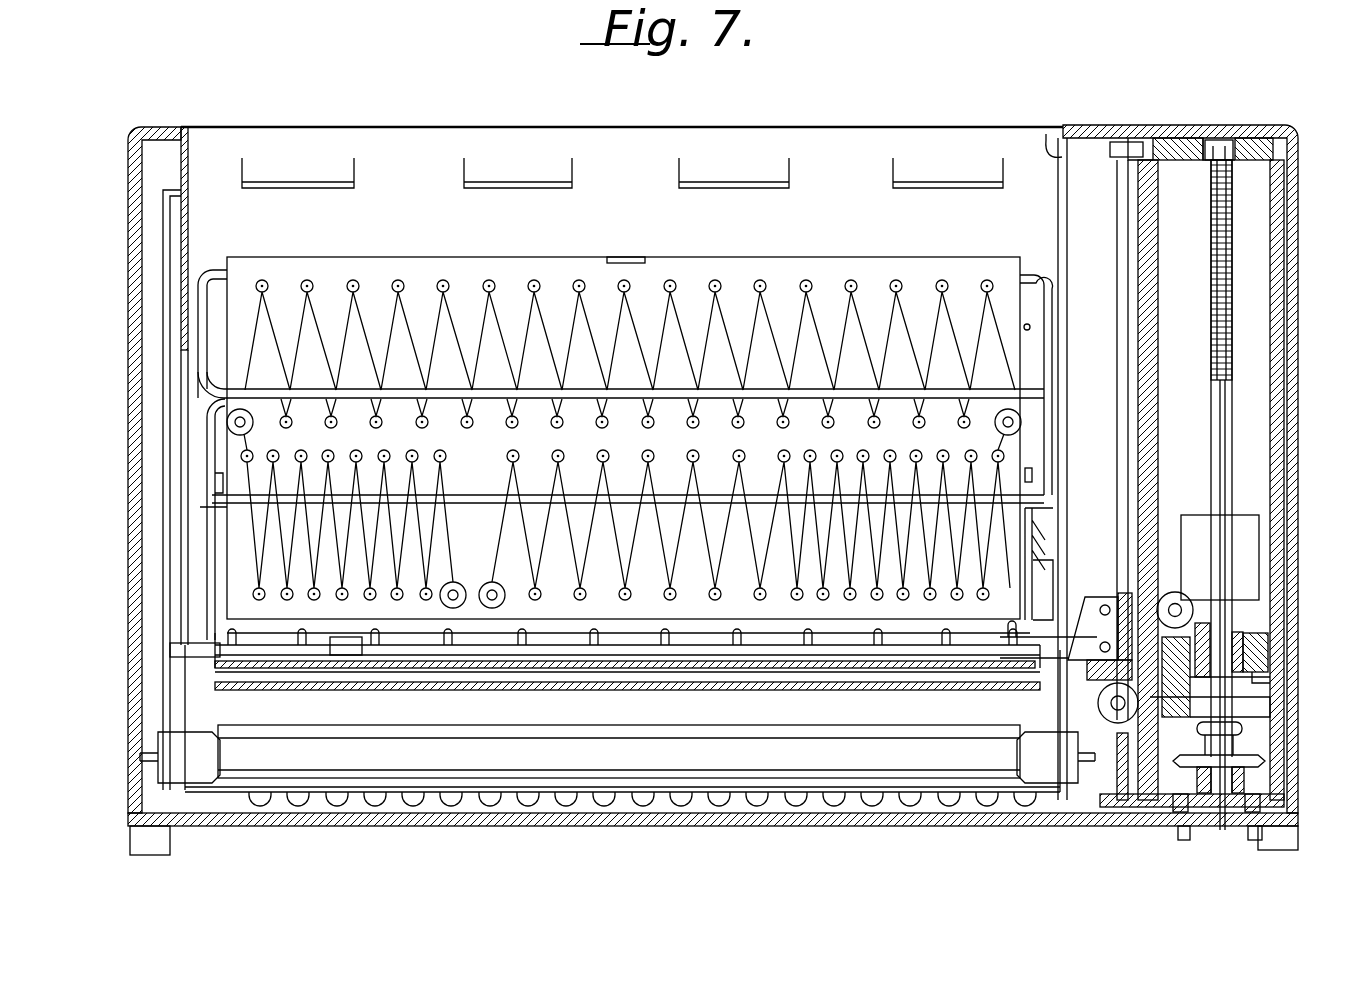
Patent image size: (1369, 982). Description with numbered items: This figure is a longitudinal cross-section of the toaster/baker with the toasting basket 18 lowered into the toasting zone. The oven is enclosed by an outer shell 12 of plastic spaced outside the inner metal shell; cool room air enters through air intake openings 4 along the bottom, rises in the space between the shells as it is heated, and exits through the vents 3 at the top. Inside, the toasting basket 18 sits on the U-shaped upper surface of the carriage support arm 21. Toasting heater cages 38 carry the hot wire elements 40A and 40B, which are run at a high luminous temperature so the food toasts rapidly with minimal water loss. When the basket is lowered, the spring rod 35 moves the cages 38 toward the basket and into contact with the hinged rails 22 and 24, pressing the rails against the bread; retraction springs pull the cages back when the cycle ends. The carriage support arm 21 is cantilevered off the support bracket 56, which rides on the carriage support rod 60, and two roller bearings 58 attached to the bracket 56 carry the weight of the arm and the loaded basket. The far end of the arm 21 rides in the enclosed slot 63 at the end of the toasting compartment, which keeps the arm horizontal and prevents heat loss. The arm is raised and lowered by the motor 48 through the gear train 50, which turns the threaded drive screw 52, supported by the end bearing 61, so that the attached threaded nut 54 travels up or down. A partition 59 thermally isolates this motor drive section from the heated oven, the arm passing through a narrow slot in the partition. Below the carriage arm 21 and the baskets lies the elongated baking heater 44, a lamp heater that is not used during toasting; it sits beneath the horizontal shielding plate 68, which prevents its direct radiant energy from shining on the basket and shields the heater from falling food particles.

The vents 3 is at (908, 173).
The air intake openings 4 is at (528, 803).
The outer shell 12 is at (1177, 132).
The toasting basket 18 is at (1061, 429).
The carriage support arm 21 is at (743, 653).
The hinged rail 22 is at (203, 367).
The hinged rail 24 is at (203, 543).
The spring rod 35 is at (1048, 318).
The toasting heater cages 38 is at (378, 595).
The hot wire element 40A is at (240, 337).
The hot wire element 40B is at (240, 467).
The baking heater 44 is at (863, 758).
The motor 48 is at (1248, 535).
The gear train 50 is at (1246, 753).
The threaded drive screw 52 is at (1223, 392).
The threaded nut 54 is at (1238, 636).
The support bracket 56 is at (1101, 603).
The roller bearings 58 is at (1180, 608).
The partition 59 is at (1046, 140).
The carriage support rod 60 is at (1150, 290).
The end bearing 61 is at (1212, 826).
The slot 63 is at (157, 213).
The horizontal shielding plate 68 is at (565, 687).